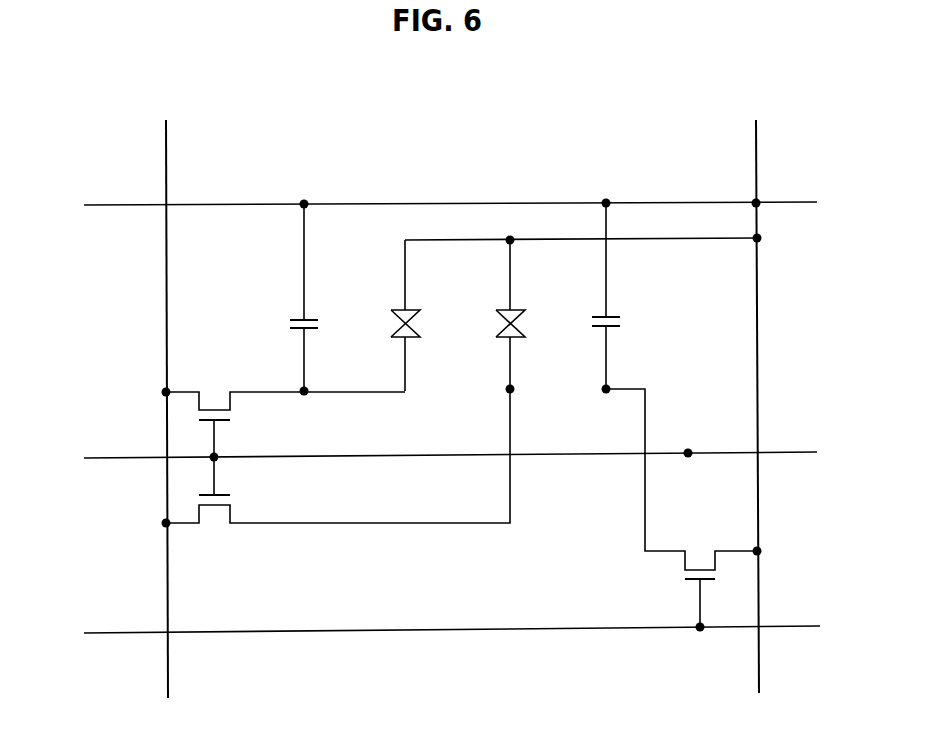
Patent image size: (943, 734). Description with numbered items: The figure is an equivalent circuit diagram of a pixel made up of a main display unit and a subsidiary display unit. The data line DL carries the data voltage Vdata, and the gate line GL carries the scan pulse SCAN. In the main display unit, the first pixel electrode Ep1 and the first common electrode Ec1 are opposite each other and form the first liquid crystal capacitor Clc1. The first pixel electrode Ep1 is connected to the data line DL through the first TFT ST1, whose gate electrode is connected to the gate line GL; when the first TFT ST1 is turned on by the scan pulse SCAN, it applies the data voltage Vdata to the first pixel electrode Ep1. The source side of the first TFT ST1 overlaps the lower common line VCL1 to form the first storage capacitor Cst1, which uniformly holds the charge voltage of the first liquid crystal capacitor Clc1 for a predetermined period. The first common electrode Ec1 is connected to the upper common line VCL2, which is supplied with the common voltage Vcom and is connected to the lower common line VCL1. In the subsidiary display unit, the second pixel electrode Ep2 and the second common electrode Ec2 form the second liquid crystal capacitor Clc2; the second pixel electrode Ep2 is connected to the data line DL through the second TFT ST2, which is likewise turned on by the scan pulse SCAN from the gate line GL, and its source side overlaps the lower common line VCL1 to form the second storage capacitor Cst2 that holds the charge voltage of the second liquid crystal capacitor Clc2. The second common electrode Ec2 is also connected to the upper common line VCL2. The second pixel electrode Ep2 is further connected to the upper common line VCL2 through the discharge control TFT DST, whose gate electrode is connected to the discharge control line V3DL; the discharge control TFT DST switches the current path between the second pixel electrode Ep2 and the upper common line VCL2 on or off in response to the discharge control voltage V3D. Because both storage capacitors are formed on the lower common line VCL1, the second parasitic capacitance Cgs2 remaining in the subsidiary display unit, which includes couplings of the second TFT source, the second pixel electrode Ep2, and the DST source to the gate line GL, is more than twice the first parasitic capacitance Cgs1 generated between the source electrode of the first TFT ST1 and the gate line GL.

The data voltage Vdata is at (185, 398).
The data line DL is at (167, 150).
The common voltage Vcom is at (439, 394).
The lower common line VCL1 is at (131, 206).
The upper common line VCL2 is at (757, 143).
The scan pulse SCAN is at (425, 485).
The gate line GL is at (131, 459).
The discharge control voltage V3D is at (432, 658).
The discharge control line V3DL is at (131, 634).
The first storage capacitor Cst1 is at (329, 298).
The second storage capacitor Cst2 is at (630, 296).
The first liquid crystal capacitor Clc1 is at (427, 315).
The second liquid crystal capacitor Clc2 is at (532, 315).
The first common electrode Ec1 is at (402, 311).
The second common electrode Ec2 is at (507, 311).
The first pixel electrode Ep1 is at (408, 337).
The second pixel electrode Ep2 is at (513, 337).
The first TFT ST1 is at (284, 416).
The second TFT ST2 is at (336, 469).
The first parasitic capacitance Cgs1 is at (230, 392).
The second parasitic capacitance Cgs2 is at (215, 459).
The discharge control TFT DST is at (684, 510).